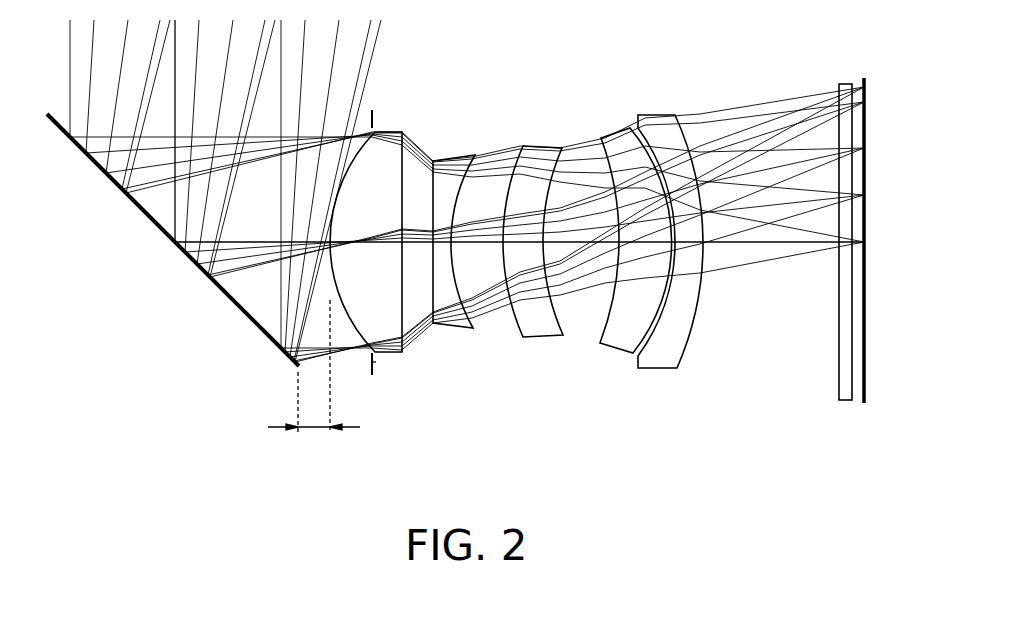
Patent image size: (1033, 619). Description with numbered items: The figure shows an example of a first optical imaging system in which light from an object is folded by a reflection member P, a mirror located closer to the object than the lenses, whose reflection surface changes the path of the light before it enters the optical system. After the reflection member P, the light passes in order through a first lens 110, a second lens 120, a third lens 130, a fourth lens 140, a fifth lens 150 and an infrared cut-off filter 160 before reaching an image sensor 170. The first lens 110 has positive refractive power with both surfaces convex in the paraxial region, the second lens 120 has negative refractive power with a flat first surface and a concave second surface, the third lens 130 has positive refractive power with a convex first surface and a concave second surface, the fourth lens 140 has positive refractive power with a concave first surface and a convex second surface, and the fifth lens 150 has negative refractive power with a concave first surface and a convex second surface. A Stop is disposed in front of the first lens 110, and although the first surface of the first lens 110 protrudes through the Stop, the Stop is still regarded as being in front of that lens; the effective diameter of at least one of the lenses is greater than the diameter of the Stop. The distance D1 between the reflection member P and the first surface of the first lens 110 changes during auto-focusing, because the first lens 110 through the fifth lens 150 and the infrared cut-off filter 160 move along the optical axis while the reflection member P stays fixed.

The reflection member P is at (140, 215).
The first lens 110 is at (386, 152).
The second lens 120 is at (448, 178).
The third lens 130 is at (540, 156).
The fourth lens 140 is at (616, 152).
The fifth lens 150 is at (653, 117).
The infrared cut-off filter 160 is at (846, 126).
The image sensor 170 is at (866, 110).
The stop Stop is at (376, 362).
The distance between the reflection member and the first surface of the first lens D1 is at (314, 380).